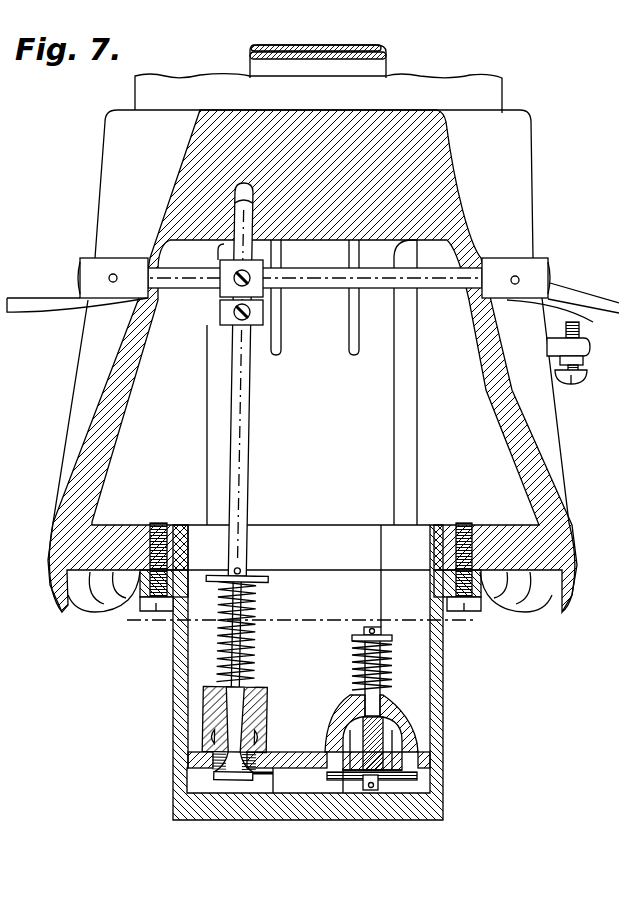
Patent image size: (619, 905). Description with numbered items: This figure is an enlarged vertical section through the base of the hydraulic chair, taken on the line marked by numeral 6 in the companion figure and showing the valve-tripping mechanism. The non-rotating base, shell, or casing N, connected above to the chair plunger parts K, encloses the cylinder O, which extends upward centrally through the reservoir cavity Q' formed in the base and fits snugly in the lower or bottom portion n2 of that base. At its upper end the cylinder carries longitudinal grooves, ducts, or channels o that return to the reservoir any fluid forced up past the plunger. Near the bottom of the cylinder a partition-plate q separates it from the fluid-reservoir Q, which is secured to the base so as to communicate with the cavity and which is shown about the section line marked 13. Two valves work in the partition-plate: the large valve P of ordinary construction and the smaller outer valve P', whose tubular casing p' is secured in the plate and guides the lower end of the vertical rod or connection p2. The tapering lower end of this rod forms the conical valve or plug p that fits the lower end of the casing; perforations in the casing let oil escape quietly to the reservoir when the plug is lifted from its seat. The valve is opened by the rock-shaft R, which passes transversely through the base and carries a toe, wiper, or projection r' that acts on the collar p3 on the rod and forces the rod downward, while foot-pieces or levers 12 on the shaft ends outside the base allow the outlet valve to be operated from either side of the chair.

The supply pipe K is at (318, 51).
The base, shell, or casing N is at (312, 343).
The section line 6 6 is at (244, 183).
The clamps and arms of rod 12 is at (80, 279).
The rock-shaft R is at (318, 272).
The toe, wiper, or projection r' is at (224, 285).
The collar p3 is at (220, 316).
The longitudinal grooves, ducts, or channels o is at (347, 328).
The cylinder O is at (309, 485).
The cavity Q' is at (203, 384).
The vertical rod or connection p2 is at (241, 548).
The lower or bottom portion of the base n2 is at (437, 568).
The fluid-reservoir Q is at (310, 672).
The center line 13 is at (300, 622).
The outer valve P' is at (207, 728).
The tubular casing p' is at (202, 749).
The conical or tapering valve or plug p is at (221, 782).
The partition-plate q is at (298, 768).
The large valve P is at (395, 708).